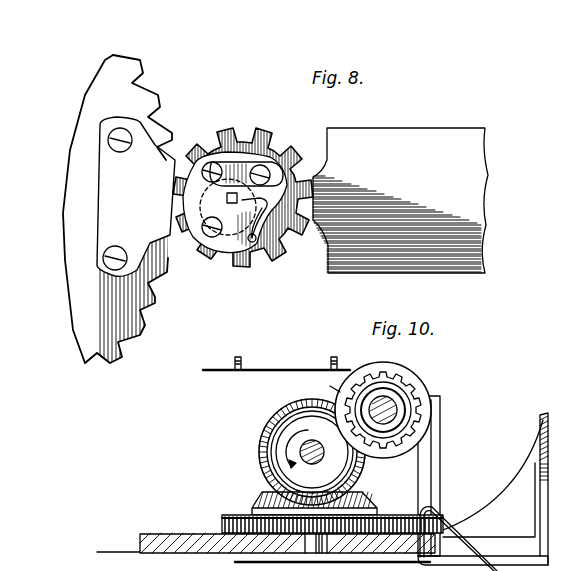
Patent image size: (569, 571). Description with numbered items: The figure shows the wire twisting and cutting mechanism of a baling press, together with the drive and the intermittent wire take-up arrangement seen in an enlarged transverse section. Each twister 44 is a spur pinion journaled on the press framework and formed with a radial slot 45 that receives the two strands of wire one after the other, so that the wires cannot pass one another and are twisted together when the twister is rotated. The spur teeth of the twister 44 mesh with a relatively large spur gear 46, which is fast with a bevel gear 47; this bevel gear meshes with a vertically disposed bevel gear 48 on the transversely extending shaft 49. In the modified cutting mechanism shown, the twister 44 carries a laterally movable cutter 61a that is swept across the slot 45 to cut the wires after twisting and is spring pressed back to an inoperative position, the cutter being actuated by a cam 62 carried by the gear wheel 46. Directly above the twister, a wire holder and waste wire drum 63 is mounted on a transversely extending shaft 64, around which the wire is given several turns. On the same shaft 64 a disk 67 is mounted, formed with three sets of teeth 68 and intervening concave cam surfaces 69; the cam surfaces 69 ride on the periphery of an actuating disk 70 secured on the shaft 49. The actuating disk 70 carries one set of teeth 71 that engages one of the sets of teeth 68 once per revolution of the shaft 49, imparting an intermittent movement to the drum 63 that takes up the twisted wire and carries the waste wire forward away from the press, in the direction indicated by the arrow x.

In FIG. 8, the twister 44 is at (265, 138).
In FIG. 10, the twister 44 is at (445, 527).
In FIG. 8, the radial slot 45 is at (252, 248).
In FIG. 8, the spur gear 46 is at (98, 354).
In FIG. 10, the spur gear 46 is at (222, 520).
In FIG. 10, the bevel gear 47 is at (262, 500).
In FIG. 10, the bevel gear 48 is at (262, 430).
In FIG. 10, the shaft 49 is at (322, 458).
In FIG. 8, the cutter 61a is at (205, 258).
In FIG. 8, the cam 62 is at (119, 212).
In FIG. 10, the wire holder and waste wire drum 63 is at (412, 370).
In FIG. 10, the shaft 64 is at (383, 405).
In FIG. 10, the disk 67 is at (412, 398).
In FIG. 10, the teeth 68 is at (440, 412).
In FIG. 10, the concave cam surface 69 is at (420, 432).
In FIG. 10, the actuating disk 70 is at (290, 453).
In FIG. 10, the teeth 71 is at (318, 392).
In FIG. 10, the direction arrow x is at (492, 502).